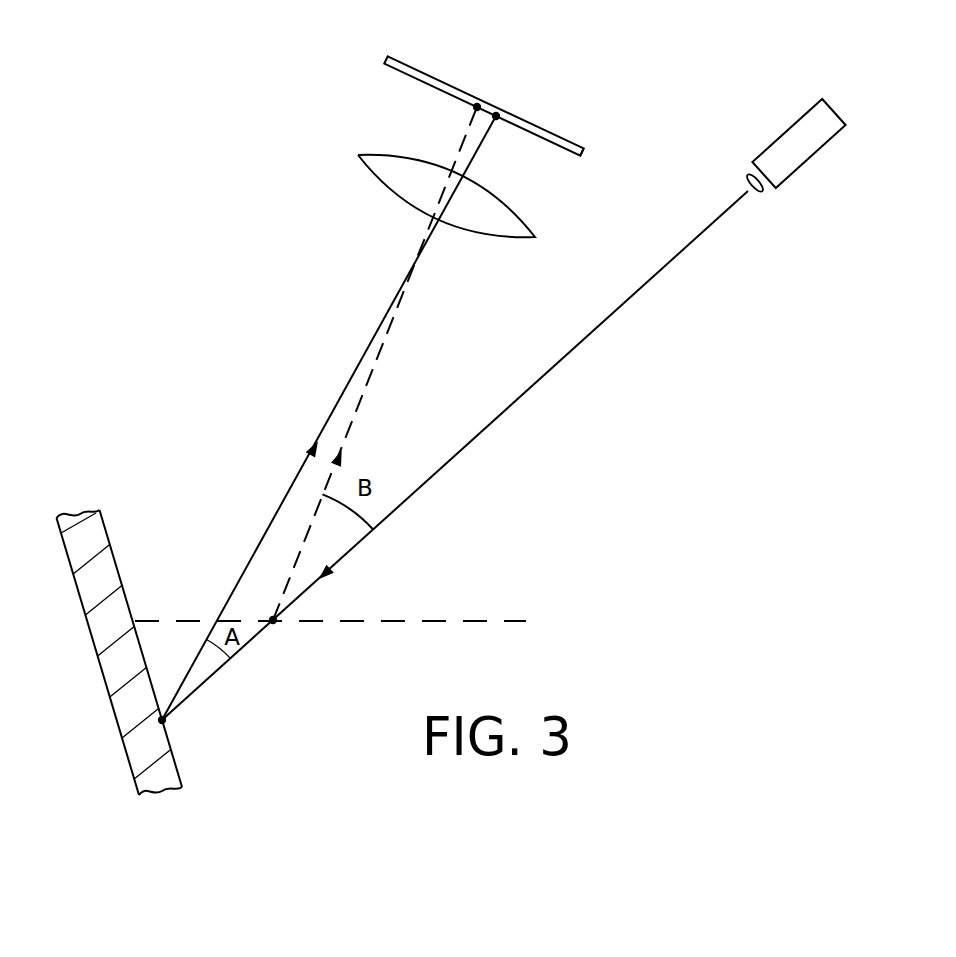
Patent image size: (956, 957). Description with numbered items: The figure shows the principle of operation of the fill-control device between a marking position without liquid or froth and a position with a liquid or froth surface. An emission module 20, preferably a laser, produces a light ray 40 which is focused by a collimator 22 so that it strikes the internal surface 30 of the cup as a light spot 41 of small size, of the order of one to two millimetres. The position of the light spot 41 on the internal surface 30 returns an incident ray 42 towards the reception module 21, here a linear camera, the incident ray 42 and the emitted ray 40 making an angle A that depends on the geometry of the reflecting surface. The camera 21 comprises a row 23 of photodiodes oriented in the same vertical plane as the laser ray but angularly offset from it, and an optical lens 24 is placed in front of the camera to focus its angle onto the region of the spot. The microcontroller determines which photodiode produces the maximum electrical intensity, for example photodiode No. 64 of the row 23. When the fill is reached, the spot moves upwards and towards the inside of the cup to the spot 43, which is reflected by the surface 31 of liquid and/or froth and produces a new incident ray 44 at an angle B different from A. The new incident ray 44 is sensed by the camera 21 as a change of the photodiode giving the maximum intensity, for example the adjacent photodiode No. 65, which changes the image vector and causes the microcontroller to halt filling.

The emission module 20 is at (808, 162).
The reception module 21 is at (583, 131).
The collimator 22 is at (760, 193).
The row of photodiodes 23 is at (570, 157).
The optical lens 24 is at (390, 155).
The internal surface of the cup 30 is at (177, 767).
The surface of liquid and/or froth 31 is at (518, 618).
The emitted ray 40 is at (607, 320).
The light spot 41 is at (155, 725).
The incident ray 42 is at (348, 382).
The spot on liquid or froth surface 43 is at (275, 624).
The new incident ray 44 is at (367, 383).
The photodiode No. 64 is at (497, 114).
The photodiode No. 65 is at (476, 105).